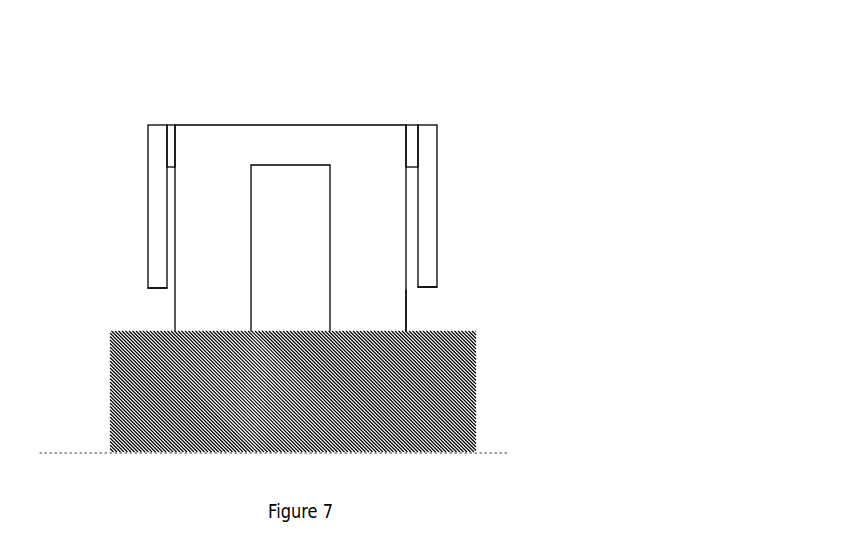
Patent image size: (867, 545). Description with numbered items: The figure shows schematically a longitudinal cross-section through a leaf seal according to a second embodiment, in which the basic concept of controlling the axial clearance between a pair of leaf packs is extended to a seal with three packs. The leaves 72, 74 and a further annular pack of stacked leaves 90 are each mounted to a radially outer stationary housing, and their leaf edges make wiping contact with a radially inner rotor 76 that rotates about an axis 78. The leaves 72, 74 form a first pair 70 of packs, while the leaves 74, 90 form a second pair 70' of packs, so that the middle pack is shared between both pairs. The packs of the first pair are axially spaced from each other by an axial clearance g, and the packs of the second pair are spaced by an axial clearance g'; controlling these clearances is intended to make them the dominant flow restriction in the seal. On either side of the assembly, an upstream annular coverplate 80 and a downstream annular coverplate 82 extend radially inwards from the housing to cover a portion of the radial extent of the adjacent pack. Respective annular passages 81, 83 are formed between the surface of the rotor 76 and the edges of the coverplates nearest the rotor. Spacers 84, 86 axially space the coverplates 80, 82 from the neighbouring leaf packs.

The first pair of packs 70 is at (250, 82).
The second pair of packs 70' is at (329, 31).
The leaves 72 is at (193, 250).
The leaves 74 is at (271, 193).
The rotor 76 is at (132, 358).
The axis 78 is at (437, 452).
The upstream annular coverplate 80 is at (158, 162).
The annular passage 81 is at (155, 308).
The downstream annular coverplate 82 is at (434, 197).
The annular passage 83 is at (428, 310).
The spacer 84 is at (172, 125).
The spacer 86 is at (412, 127).
The further annular pack of stacked leaves 90 is at (390, 300).
The axial clearance g is at (249, 277).
The axial clearance g' is at (325, 277).